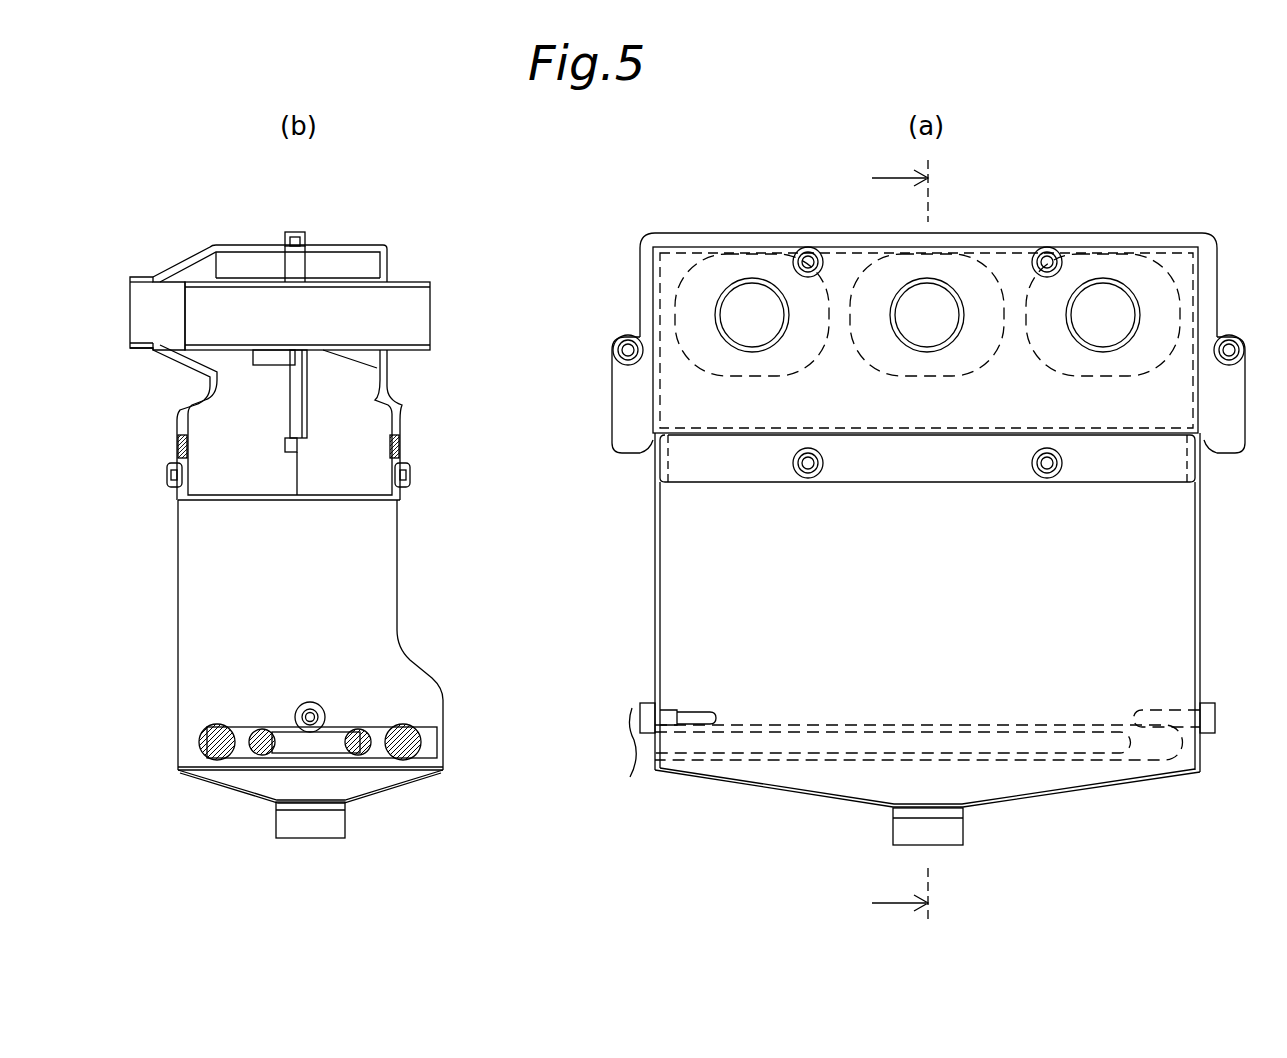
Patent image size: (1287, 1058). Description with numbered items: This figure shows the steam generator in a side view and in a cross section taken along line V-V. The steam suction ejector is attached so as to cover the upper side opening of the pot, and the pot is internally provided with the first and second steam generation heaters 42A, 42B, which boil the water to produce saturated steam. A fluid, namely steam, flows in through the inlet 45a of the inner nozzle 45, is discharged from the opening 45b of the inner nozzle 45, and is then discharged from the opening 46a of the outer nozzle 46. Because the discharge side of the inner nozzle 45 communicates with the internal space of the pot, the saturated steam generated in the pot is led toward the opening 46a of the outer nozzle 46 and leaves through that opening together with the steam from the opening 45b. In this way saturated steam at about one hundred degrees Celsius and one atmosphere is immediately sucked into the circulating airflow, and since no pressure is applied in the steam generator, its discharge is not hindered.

The first steam generation heater 42A is at (407, 738).
The second steam generation heater 42B is at (363, 750).
The inner nozzle 45 is at (245, 285).
The inlet 45a is at (408, 305).
The opening 45b is at (203, 313).
The outer nozzle 46 is at (165, 265).
The opening 46a is at (143, 322).